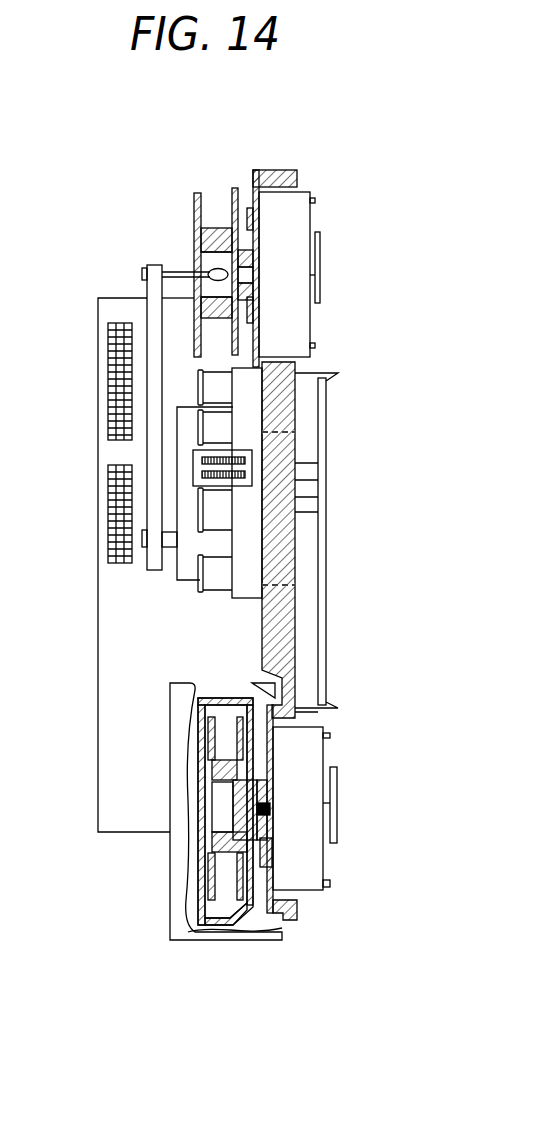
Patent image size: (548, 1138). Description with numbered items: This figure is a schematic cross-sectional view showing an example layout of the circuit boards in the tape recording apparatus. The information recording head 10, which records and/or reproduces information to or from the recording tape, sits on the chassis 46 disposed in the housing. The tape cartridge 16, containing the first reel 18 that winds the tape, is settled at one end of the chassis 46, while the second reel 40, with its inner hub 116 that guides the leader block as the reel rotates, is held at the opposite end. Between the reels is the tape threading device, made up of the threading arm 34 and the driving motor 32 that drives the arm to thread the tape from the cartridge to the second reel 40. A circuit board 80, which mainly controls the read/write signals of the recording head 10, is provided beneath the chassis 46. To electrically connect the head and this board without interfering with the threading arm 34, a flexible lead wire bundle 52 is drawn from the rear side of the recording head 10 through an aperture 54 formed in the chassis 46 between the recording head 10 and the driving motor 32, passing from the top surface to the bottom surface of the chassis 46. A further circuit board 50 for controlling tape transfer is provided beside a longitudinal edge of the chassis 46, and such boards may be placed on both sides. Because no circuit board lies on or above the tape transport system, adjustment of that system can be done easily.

The information recording head 10 is at (193, 467).
The tape cartridge 16 is at (200, 895).
The first reel 18 is at (217, 838).
The driving motor 32 is at (312, 885).
The threading arm 34 is at (152, 287).
The second reel 40 is at (195, 247).
The chassis 46 is at (282, 167).
The circuit board 50 is at (103, 680).
The flexible lead wire bundle 52 is at (312, 472).
The aperture 54 is at (288, 438).
The circuit board 80 is at (326, 532).
The inner hub 116 is at (217, 228).